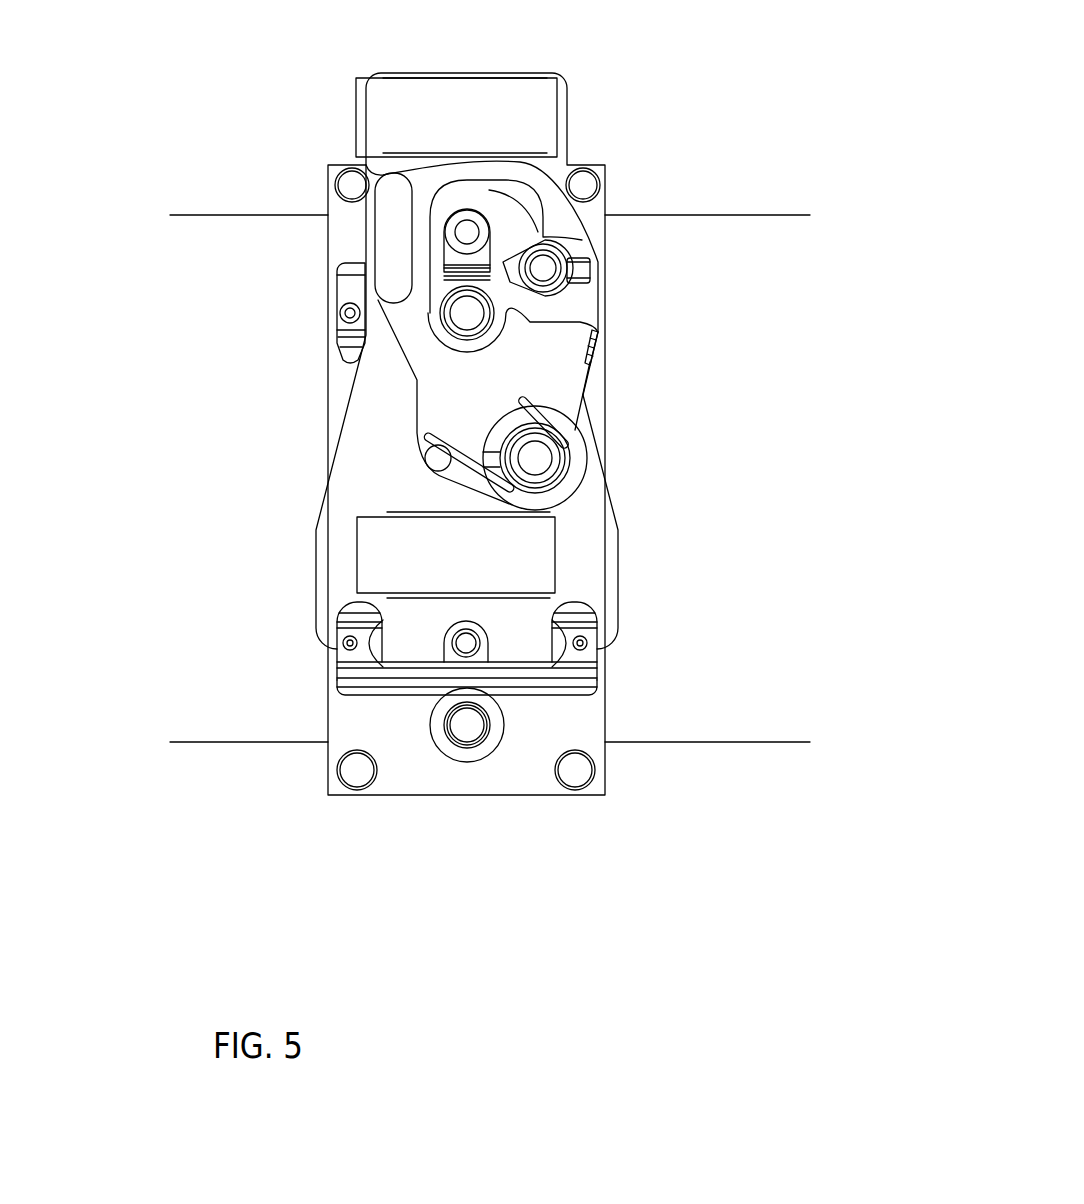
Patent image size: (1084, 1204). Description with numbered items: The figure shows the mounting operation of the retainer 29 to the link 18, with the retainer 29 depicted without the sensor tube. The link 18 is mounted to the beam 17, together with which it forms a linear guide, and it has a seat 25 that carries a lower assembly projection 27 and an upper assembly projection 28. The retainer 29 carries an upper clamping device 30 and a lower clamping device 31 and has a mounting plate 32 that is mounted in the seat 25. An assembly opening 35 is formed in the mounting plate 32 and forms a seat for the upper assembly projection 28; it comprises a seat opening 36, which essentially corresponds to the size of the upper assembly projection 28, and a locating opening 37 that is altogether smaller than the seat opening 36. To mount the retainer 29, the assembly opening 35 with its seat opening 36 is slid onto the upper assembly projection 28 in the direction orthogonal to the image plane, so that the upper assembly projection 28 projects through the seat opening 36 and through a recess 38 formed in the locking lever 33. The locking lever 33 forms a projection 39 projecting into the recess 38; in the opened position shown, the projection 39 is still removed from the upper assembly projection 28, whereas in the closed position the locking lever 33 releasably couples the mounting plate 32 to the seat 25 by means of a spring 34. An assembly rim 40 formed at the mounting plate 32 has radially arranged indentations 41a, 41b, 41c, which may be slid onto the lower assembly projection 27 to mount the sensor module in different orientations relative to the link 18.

The beam 17 is at (246, 340).
The link 18 is at (436, 796).
The seat 25 is at (596, 380).
The lower assembly projection 27 is at (506, 725).
The upper assembly projection 28 is at (574, 323).
The retainer 29 is at (622, 481).
The upper clamping device 30 is at (356, 124).
The lower clamping device 31 is at (357, 556).
The mounting plate 32 is at (605, 545).
The locking lever 33 is at (428, 389).
The spring 34 is at (490, 468).
The assembly opening 35 is at (558, 237).
The seat opening 36 is at (527, 297).
The locating opening 37 is at (496, 252).
The recess 38 is at (490, 192).
The projection 39 is at (455, 290).
The assembly rim 40 is at (603, 619).
The indentation 41a is at (337, 637).
The indentation 41b is at (440, 648).
The indentation 41c is at (603, 639).